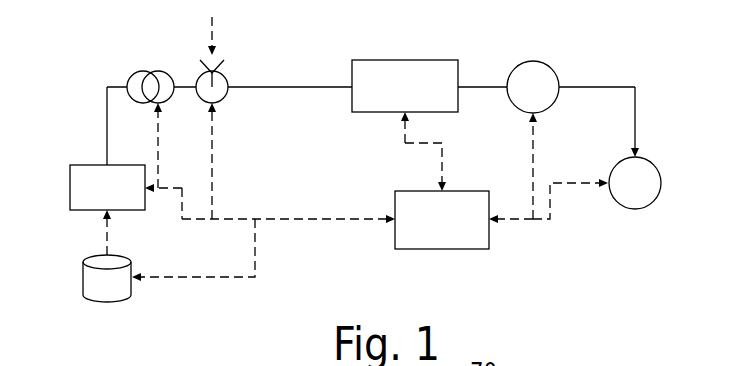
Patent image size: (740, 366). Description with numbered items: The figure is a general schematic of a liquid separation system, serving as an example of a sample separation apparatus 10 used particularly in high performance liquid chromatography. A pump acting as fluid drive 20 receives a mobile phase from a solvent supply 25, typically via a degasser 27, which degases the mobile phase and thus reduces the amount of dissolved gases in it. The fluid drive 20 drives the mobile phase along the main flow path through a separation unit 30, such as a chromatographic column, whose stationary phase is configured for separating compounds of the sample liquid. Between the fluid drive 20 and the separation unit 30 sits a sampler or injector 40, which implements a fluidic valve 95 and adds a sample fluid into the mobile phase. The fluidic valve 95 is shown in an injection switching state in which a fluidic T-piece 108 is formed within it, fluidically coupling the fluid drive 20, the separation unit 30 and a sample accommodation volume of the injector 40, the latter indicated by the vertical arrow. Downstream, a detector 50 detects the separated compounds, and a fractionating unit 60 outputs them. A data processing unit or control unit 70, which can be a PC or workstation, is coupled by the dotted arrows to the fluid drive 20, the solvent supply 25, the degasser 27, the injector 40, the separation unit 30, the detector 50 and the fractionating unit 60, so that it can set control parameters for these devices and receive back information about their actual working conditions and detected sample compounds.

The sample separation apparatus 10 is at (547, 281).
The fluid drive 20 is at (136, 72).
The solvent supply 25 is at (83, 275).
The degasser 27 is at (88, 165).
The separation unit 30 is at (370, 113).
The injector 40 is at (202, 65).
The detector 50 is at (532, 62).
The fractionating unit 60 is at (661, 183).
The control unit 70 is at (440, 250).
The fluidic valve 95 is at (225, 97).
The fluidic T-piece 108 is at (216, 78).